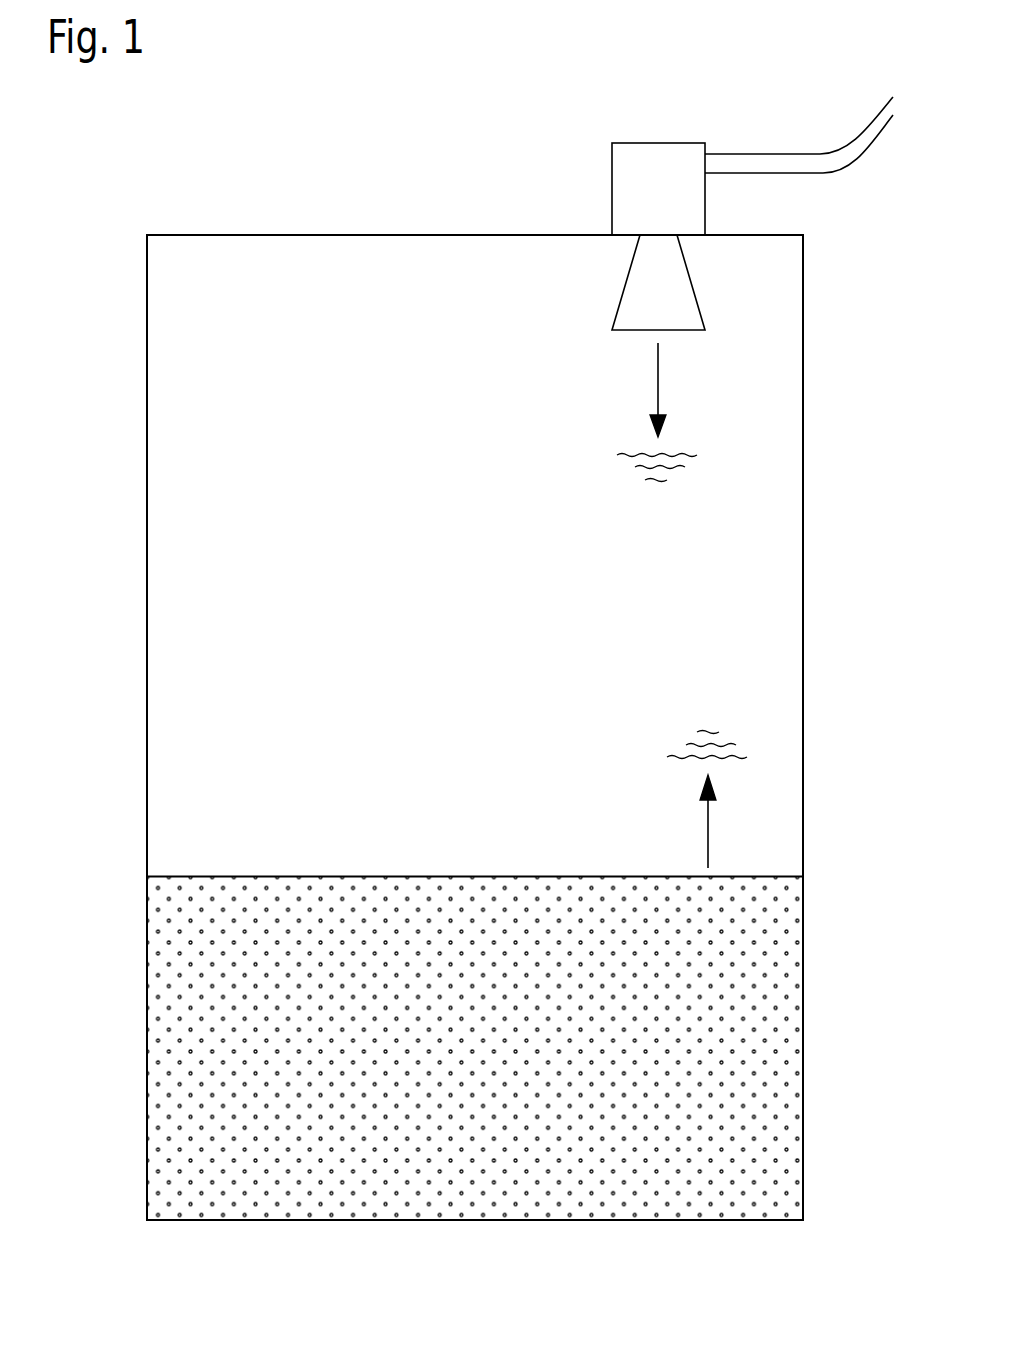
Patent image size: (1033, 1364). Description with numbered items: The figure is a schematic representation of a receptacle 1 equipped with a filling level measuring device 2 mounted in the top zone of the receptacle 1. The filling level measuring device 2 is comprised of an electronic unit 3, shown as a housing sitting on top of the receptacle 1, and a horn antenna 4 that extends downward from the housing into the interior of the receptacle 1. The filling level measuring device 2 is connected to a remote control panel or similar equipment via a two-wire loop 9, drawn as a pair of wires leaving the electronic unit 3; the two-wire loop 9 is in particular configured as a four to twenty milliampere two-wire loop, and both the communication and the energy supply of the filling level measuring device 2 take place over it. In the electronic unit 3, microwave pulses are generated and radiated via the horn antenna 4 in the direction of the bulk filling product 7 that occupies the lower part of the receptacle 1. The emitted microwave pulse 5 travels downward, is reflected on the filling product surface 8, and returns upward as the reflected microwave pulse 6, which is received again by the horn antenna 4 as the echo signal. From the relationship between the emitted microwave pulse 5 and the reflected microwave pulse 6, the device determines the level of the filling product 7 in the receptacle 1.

The receptacle 1 is at (788, 660).
The filling level measuring device 2 is at (706, 205).
The electronic unit 3 is at (687, 212).
The horn antenna 4 is at (677, 298).
The emitted microwave pulse 5 is at (706, 442).
The reflected microwave pulse 6 is at (753, 737).
The filling product 7 is at (475, 1048).
The filling product surface 8 is at (438, 860).
The two-wire loop 9 is at (742, 154).